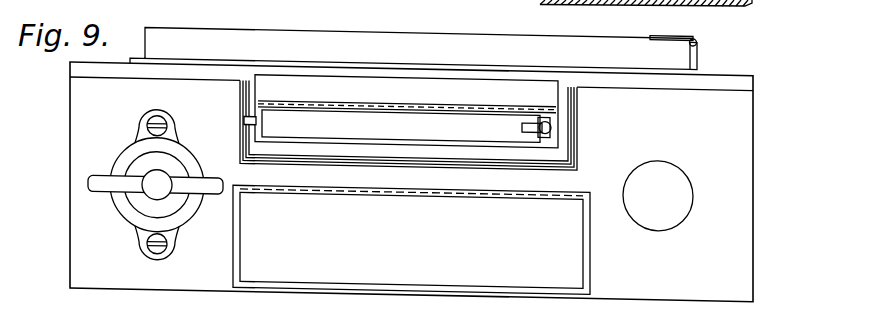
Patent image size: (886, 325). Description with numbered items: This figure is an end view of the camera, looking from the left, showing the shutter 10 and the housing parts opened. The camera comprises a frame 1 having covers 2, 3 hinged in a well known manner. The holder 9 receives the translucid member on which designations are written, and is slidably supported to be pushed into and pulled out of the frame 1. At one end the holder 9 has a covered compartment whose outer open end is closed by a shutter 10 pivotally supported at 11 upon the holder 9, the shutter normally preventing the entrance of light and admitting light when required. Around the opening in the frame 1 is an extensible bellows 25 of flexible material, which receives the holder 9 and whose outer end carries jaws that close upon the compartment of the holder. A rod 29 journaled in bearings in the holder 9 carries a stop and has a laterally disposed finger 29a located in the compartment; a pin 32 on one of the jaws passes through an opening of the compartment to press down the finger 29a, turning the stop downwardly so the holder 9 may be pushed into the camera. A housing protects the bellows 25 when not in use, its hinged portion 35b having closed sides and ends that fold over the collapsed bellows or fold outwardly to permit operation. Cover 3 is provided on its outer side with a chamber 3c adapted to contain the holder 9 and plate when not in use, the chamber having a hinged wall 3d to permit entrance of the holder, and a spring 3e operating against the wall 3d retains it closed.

The frame 1 is at (730, 131).
The cover 2 is at (671, 1).
The cover 3 is at (753, 82).
The chamber 3c is at (402, 14).
The hinged wall 3d is at (700, 68).
The spring 3e is at (698, 42).
The holder 9 is at (401, 126).
The shutter 10 is at (453, 88).
The pivot 11 is at (516, 108).
The bellows 25 is at (241, 106).
The rod 29 is at (548, 135).
The finger 29a is at (515, 132).
The pin 32 is at (528, 124).
The hinged portion 35b is at (510, 233).